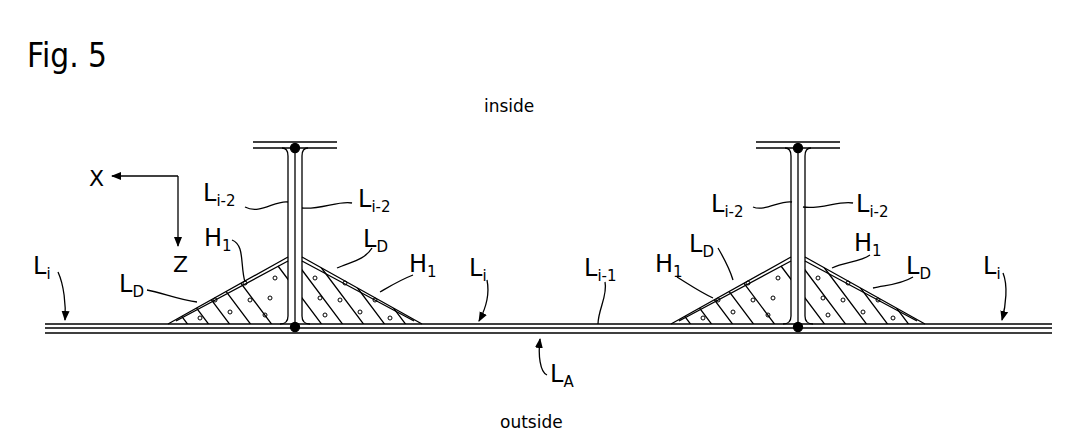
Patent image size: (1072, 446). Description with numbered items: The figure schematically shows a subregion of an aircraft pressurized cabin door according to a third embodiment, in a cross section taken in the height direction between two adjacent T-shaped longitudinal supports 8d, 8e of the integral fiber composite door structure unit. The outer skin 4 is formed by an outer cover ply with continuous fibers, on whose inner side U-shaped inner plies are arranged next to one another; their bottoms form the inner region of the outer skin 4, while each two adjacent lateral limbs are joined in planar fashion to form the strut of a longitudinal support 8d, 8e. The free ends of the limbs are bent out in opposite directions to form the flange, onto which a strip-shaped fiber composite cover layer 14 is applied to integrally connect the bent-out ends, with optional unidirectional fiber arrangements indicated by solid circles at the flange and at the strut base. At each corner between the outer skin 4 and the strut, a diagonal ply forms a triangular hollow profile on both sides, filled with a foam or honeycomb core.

The outer skin 4 is at (140, 335).
The longitudinal support 8e is at (292, 127).
The longitudinal support 8d is at (797, 127).
The fiber composite cover layer 14 is at (265, 142).